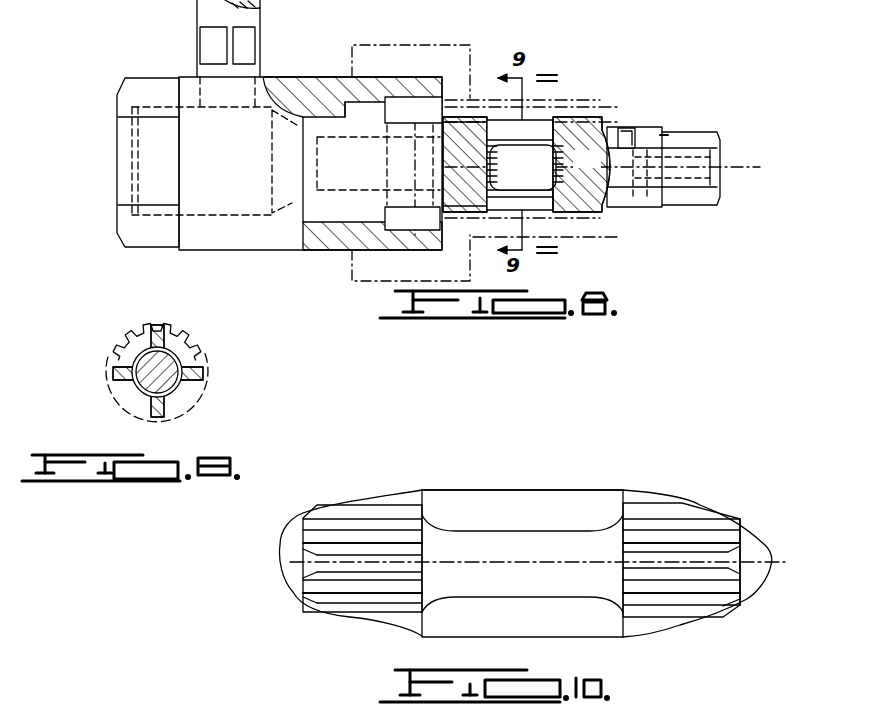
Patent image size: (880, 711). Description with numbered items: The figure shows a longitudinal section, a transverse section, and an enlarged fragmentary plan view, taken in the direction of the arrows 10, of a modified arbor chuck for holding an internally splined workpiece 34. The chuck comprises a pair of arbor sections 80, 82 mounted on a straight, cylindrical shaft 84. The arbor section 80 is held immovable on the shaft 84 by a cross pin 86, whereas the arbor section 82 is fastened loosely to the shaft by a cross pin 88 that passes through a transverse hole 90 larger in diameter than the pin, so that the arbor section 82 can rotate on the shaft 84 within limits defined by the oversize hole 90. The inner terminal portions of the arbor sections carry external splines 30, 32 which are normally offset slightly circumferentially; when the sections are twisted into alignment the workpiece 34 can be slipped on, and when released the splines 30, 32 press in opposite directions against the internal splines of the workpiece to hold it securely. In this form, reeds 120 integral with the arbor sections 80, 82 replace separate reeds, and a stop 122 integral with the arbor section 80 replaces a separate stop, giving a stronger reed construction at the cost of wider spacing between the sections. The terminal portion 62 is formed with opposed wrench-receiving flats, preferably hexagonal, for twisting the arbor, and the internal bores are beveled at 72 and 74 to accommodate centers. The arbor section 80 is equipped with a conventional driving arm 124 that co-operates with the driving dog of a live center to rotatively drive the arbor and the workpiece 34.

In FIG. 8, the section line 10— 10 is at (633, 130).
In FIG. 8, the external splines 30 is at (477, 115).
In FIG. 9, the external splines 30 is at (143, 325).
In FIG. 10, the external splines 30 is at (358, 527).
In FIG. 8, the external splines 32 is at (590, 118).
In FIG. 10, the external splines 32 is at (680, 520).
In FIG. 8, the workpiece 34 is at (423, 36).
In FIG. 8, the terminal portion 62 is at (703, 134).
In FIG. 8, the beveled internal bore 72 is at (120, 140).
In FIG. 8, the beveled internal bore 74 is at (721, 152).
In FIG. 8, the arbor section 80 is at (335, 110).
In FIG. 10, the arbor section 80 is at (290, 540).
In FIG. 8, the arbor section 82 is at (587, 160).
In FIG. 10, the arbor section 82 is at (753, 553).
In FIG. 8, the cylindrical shaft 84 is at (385, 200).
In FIG. 9, the cylindrical shaft 84 is at (168, 388).
In FIG. 10, the cylindrical shaft 84 is at (478, 492).
In FIG. 8, the cross pin 86 is at (392, 150).
In FIG. 8, the cross pin 88 is at (640, 133).
In FIG. 8, the transverse hole 90 is at (666, 136).
In FIG. 8, the reeds 120 is at (513, 170).
In FIG. 9, the reeds 120 is at (185, 354).
In FIG. 10, the reeds 120 is at (470, 545).
In FIG. 8, the stop 122 is at (412, 77).
In FIG. 8, the driving arm 124 is at (197, 10).